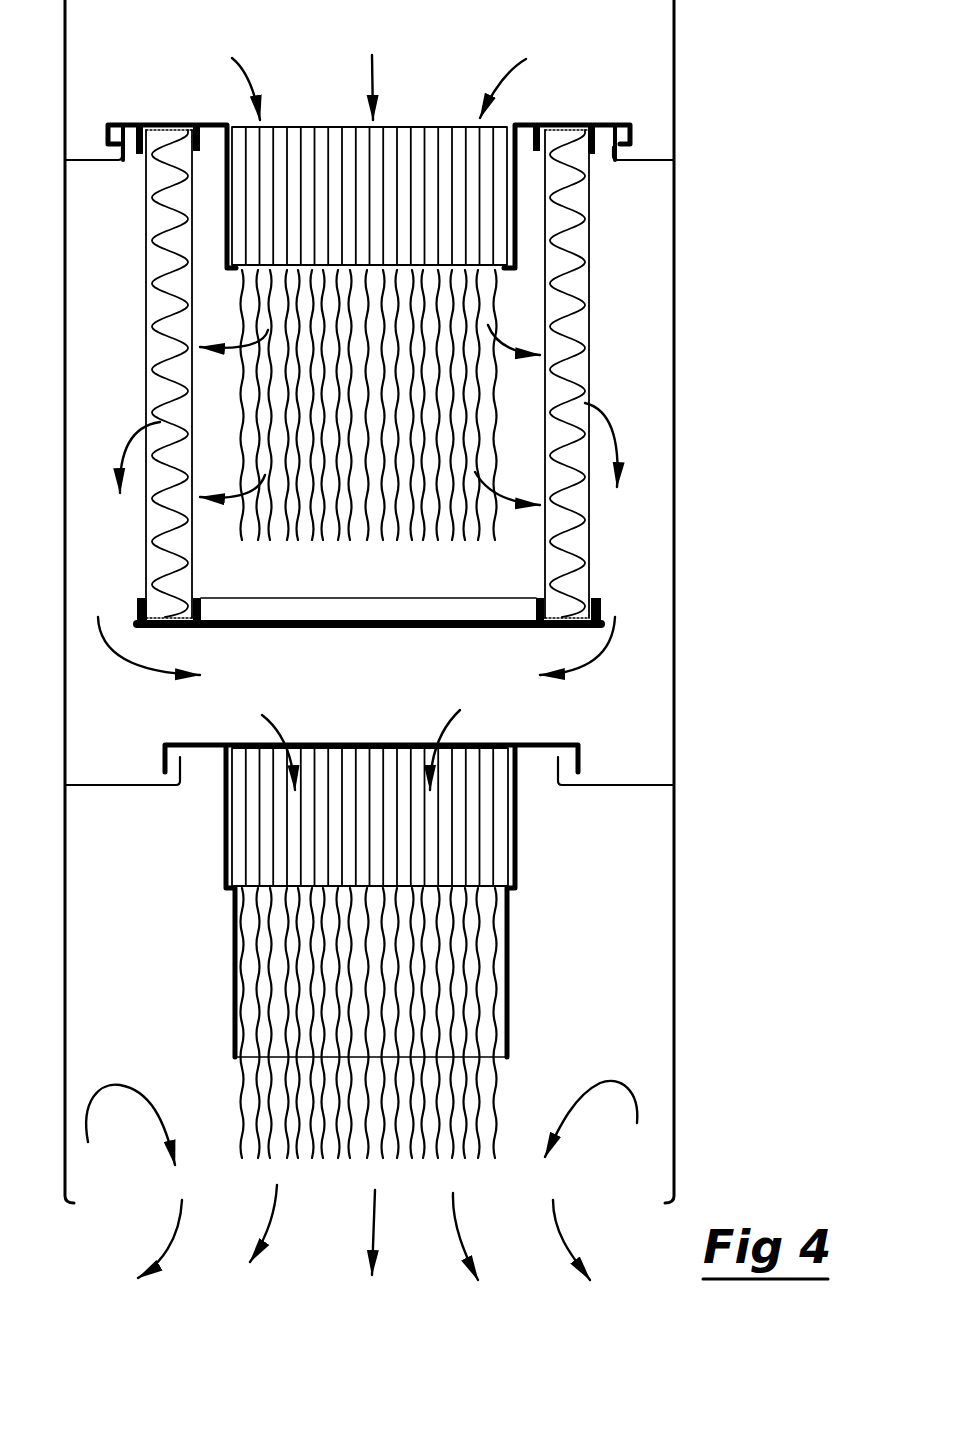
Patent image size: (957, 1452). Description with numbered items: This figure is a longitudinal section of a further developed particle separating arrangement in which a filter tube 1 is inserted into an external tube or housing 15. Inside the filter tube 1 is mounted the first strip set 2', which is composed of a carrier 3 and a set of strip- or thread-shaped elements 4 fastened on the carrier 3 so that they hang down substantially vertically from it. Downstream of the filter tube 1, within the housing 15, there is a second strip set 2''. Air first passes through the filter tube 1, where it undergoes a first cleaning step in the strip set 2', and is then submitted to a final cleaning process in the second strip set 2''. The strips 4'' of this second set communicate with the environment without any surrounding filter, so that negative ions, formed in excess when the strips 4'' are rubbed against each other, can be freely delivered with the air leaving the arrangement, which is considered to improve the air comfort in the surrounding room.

The filter tube 1 is at (590, 310).
The first strip set 2' is at (365, 228).
The second strip set 2'' is at (401, 901).
The carrier 3 is at (485, 214).
The strip- or thread-shaped elements 4 is at (369, 429).
The strips of the second strip set 4'' is at (325, 1023).
The external tube or housing 15 is at (674, 278).